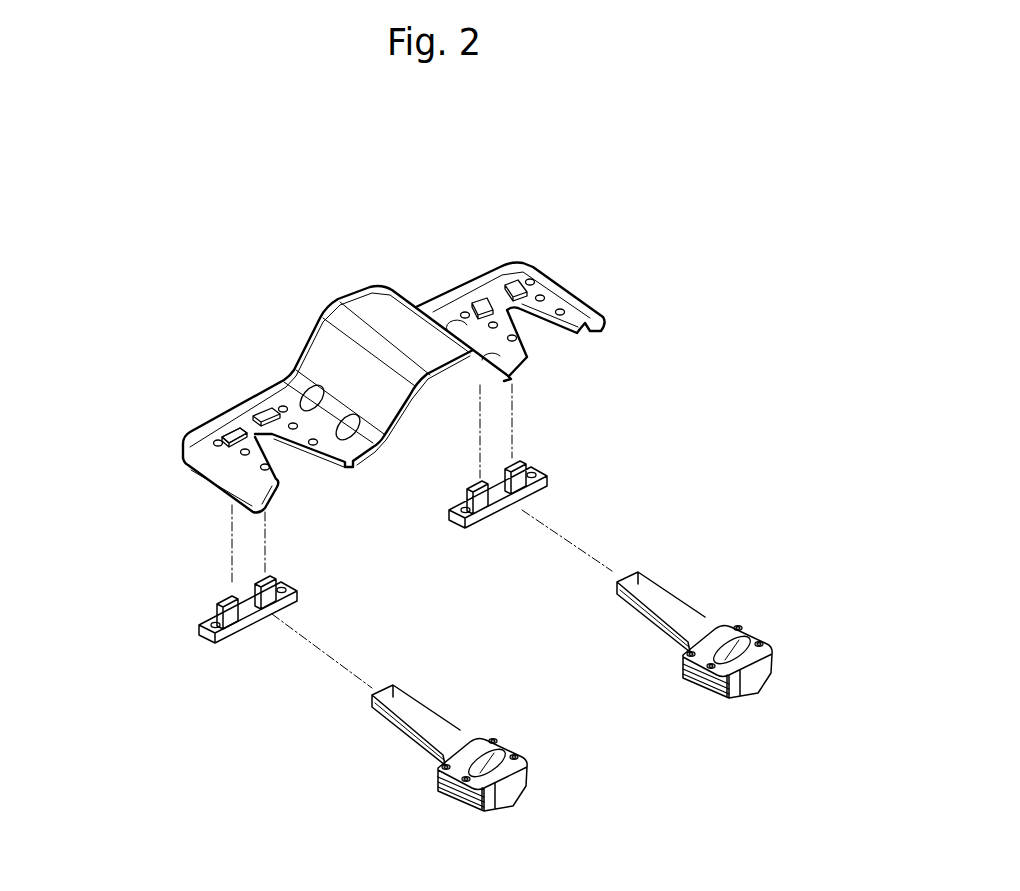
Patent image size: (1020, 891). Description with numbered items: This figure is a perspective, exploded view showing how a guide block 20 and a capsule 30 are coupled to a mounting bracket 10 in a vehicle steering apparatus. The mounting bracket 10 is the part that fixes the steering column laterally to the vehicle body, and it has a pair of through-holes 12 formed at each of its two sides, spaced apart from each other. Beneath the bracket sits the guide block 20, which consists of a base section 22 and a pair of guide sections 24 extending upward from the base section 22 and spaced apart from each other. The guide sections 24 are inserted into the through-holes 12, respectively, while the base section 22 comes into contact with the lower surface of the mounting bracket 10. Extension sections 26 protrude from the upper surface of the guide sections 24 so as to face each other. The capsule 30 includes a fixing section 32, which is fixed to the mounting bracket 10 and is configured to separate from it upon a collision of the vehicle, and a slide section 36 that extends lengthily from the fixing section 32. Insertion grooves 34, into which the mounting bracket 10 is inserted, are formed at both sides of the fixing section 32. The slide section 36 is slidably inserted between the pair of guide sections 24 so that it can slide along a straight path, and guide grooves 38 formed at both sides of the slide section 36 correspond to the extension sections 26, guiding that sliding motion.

The mounting bracket 10 is at (372, 313).
The through-holes 12 is at (232, 426).
The guide block 20 is at (197, 607).
The base section 22 is at (204, 634).
The guide sections 24 is at (247, 623).
The extension sections 26 is at (226, 592).
The capsule 30 is at (479, 760).
The fixing section 32 is at (500, 795).
The insertion grooves 34 is at (442, 793).
The slide section 36 is at (430, 720).
The guide grooves 38 is at (390, 718).